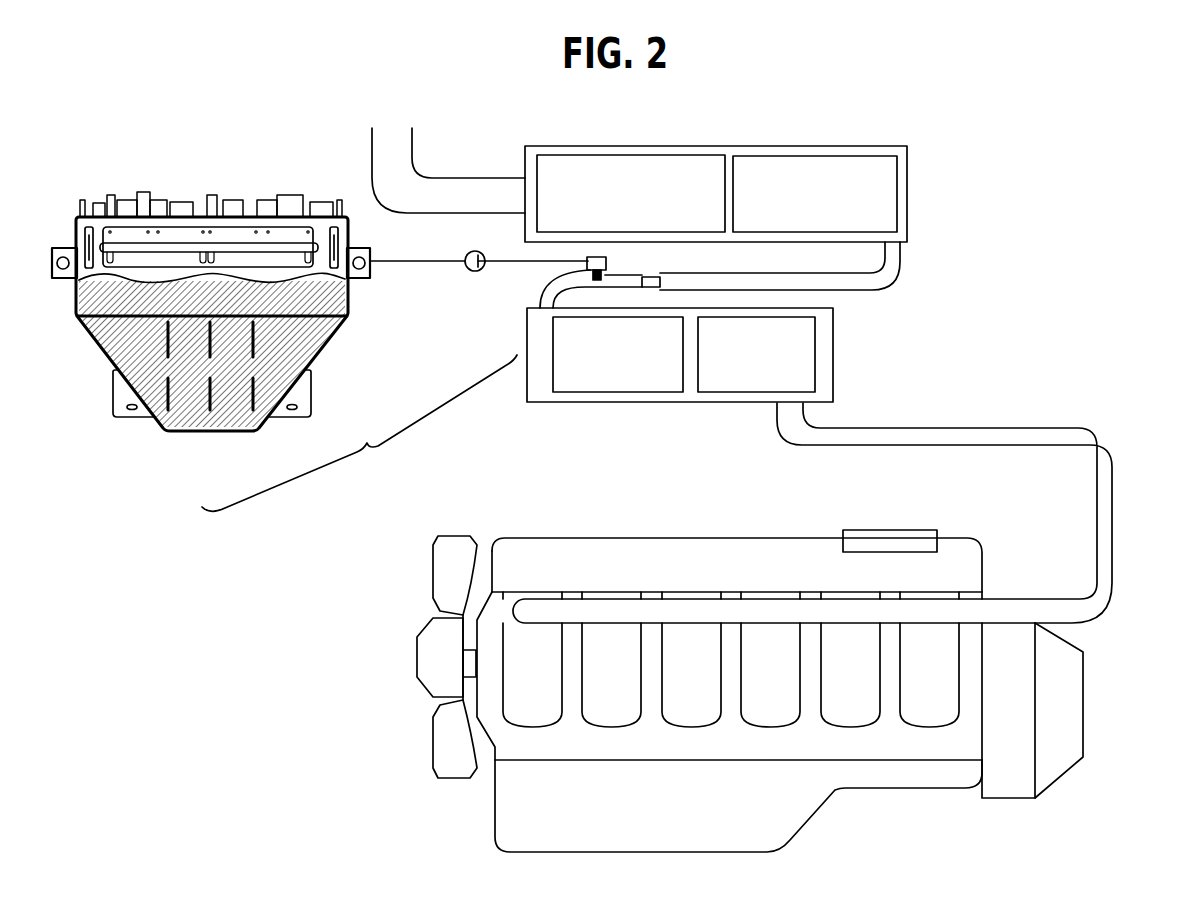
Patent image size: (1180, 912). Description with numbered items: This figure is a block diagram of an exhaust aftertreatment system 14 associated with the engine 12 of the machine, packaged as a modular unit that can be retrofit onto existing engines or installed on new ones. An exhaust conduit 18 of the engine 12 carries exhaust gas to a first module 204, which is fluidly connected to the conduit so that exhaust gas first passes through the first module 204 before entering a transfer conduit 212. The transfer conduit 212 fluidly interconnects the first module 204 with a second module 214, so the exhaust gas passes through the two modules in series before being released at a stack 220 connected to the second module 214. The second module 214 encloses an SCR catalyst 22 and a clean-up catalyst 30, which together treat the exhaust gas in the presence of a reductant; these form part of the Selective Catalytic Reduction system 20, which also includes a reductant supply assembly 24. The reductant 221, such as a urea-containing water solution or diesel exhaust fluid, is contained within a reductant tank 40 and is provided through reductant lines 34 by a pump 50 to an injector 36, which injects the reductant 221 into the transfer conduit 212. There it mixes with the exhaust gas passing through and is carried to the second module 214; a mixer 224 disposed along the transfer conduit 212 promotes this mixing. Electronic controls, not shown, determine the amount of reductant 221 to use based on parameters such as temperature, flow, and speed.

The engine 12 is at (1098, 707).
The exhaust aftertreatment system 14 is at (933, 89).
The exhaust conduit 18 is at (980, 433).
The Selective Catalytic Reduction (SCR) system 20 is at (980, 143).
The SCR catalyst 22 is at (803, 178).
The reductant supply assembly 24 is at (359, 433).
The clean-up catalyst 30 is at (607, 172).
The reductant lines 34 is at (498, 258).
The injector 36 is at (575, 267).
The reductant tank 40 is at (143, 195).
The pump 50 is at (473, 271).
The first module 204 is at (837, 363).
The transfer conduit 212 is at (892, 270).
The second module 214 is at (730, 148).
The stack 220 is at (415, 193).
The reductant 221 is at (137, 347).
The mixer 224 is at (648, 275).